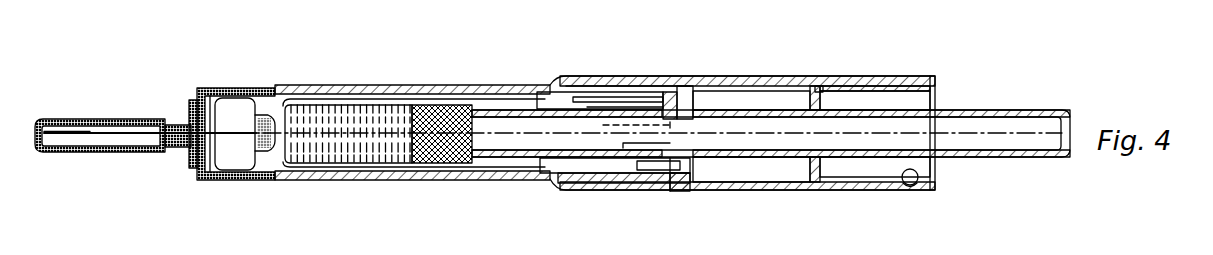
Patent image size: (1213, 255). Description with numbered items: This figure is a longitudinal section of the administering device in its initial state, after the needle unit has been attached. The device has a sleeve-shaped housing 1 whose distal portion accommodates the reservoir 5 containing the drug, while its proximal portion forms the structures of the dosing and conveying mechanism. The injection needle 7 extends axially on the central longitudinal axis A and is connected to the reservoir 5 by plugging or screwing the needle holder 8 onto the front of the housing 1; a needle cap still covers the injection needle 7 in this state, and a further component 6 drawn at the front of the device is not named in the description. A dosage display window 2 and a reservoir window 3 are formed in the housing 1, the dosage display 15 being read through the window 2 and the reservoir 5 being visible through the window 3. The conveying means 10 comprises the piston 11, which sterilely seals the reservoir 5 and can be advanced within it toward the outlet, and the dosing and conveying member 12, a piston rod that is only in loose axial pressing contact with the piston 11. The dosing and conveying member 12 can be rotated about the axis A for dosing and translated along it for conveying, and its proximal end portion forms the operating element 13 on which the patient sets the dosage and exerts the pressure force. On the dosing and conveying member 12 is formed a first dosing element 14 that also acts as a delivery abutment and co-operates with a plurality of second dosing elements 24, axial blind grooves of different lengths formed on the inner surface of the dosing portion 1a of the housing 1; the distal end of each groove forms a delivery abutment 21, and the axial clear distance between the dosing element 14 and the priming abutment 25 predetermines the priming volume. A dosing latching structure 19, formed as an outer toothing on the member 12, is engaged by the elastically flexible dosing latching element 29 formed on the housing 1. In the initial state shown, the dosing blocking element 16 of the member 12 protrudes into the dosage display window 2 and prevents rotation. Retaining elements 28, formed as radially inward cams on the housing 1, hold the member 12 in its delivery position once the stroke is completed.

The central longitudinal axis A is at (58, 133).
The injection needle 7 is at (85, 133).
The needle holder 8 is at (205, 96).
The piston 6 is at (233, 110).
The reservoir window 3 is at (310, 93).
The reservoir 5 is at (365, 103).
The piston 11 is at (435, 110).
The housing 1 is at (495, 92).
The dosing portion 1a is at (607, 87).
The delivery abutment 21 is at (560, 100).
The operating element 13 is at (993, 112).
The priming abutment 25 is at (667, 92).
The first dosing element 14 is at (677, 87).
The conveying means 10 is at (730, 107).
The dosage display window 2 is at (865, 78).
The dosage display 15 is at (878, 85).
The dosing blocking element 16 is at (825, 88).
The dosing and conveying member 12 is at (563, 157).
The second dosing elements 24 is at (648, 165).
The retaining elements 28 is at (670, 177).
The dosing latching element 29 is at (908, 193).
The dosing latching structure 19 is at (908, 193).